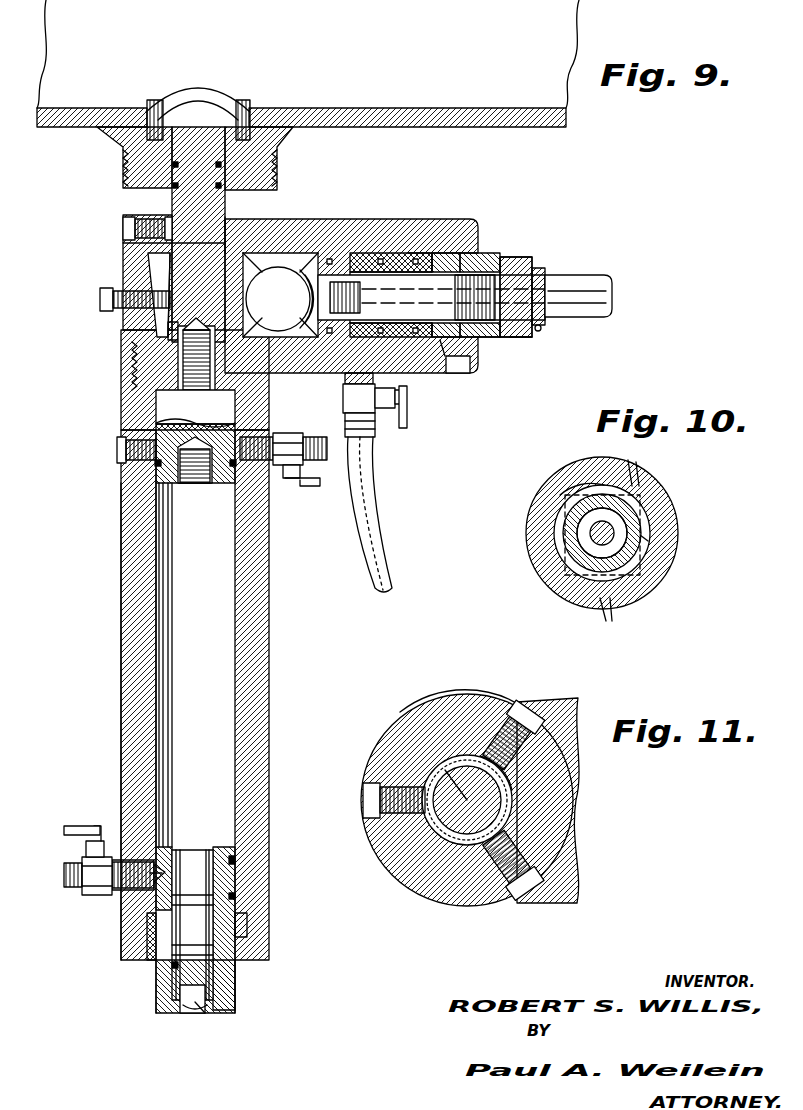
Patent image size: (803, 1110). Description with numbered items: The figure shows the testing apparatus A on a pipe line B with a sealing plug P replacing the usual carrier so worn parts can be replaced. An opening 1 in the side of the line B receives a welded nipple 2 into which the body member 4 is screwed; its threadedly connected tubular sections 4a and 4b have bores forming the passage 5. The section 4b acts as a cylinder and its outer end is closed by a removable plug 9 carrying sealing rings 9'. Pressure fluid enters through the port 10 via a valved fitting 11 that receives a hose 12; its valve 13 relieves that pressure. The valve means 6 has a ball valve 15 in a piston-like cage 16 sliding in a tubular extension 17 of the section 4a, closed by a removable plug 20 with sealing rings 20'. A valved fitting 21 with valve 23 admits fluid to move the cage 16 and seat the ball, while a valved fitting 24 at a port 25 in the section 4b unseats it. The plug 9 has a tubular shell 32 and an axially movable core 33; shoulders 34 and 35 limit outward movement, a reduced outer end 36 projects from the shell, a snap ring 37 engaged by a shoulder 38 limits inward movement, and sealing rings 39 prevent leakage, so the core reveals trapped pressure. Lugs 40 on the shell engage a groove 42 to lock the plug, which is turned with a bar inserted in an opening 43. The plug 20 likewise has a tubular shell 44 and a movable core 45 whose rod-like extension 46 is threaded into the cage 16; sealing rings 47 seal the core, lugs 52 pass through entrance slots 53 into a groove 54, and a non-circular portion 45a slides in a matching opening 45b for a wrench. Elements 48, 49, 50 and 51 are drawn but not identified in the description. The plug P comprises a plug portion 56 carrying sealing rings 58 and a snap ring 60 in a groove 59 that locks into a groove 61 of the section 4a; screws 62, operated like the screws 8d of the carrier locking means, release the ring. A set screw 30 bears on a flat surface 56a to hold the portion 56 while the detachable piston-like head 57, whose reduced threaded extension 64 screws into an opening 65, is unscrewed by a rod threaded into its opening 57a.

In FIG. 9, the pipe line B is at (308, 63).
In FIG. 9, the opening 1 is at (245, 106).
In FIG. 9, the nipple 2 is at (120, 158).
In FIG. 9, the body member 4 is at (117, 643).
In FIG. 11, the body member 4 is at (493, 699).
In FIG. 9, the tubular section 4a is at (120, 400).
In FIG. 11, the tubular section 4a is at (455, 699).
In FIG. 9, the tubular section 4b is at (130, 601).
In FIG. 9, the passage 5 is at (278, 609).
In FIG. 9, the valve means 6 is at (292, 266).
In FIG. 9, the screws 8d is at (118, 453).
In FIG. 9, the removable plug 9 is at (267, 986).
In FIG. 9, the sealing rings 9' is at (264, 855).
In FIG. 9, the port 10 is at (445, 246).
In FIG. 9, the valved fitting 11 is at (98, 230).
In FIG. 9, the hose 12 is at (386, 527).
In FIG. 9, the valve 13 is at (82, 860).
In FIG. 9, the ball valve 15 is at (280, 295).
In FIG. 9, the piston-like cage 16 is at (348, 250).
In FIG. 9, the tubular extension 17 is at (373, 216).
In FIG. 10, the tubular extension 17 is at (522, 511).
In FIG. 11, the tubular extension 17 is at (576, 701).
In FIG. 9, the removable plug 20 is at (532, 271).
In FIG. 10, the removable plug 20 is at (655, 533).
In FIG. 9, the sealing rings 20' is at (416, 221).
In FIG. 9, the valved fitting 21 is at (375, 431).
In FIG. 9, the valve 23 is at (345, 385).
In FIG. 9, the valved fitting 24 is at (290, 434).
In FIG. 9, the port 25 is at (157, 463).
In FIG. 9, the set screw 30 is at (100, 299).
In FIG. 9, the tubular shell 32 is at (234, 979).
In FIG. 9, the core 33 is at (192, 866).
In FIG. 9, the shoulder 34 is at (216, 1004).
In FIG. 9, the shoulder 35 is at (186, 1015).
In FIG. 9, the reduced outer end 36 is at (201, 1013).
In FIG. 9, the snap ring 37 is at (226, 851).
In FIG. 9, the shoulder 38 is at (234, 897).
In FIG. 9, the sealing rings 39 is at (180, 969).
In FIG. 9, the lugs 40 is at (249, 918).
In FIG. 9, the groove 42 is at (148, 926).
In FIG. 9, the opening 43 is at (158, 981).
In FIG. 9, the tubular shell 44 is at (500, 337).
In FIG. 10, the tubular shell 44 is at (574, 526).
In FIG. 9, the movable core 45 is at (518, 274).
In FIG. 10, the movable core 45 is at (592, 541).
In FIG. 9, the portion 45a is at (590, 278).
In FIG. 9, the opening 45b is at (528, 261).
In FIG. 9, the rod-like extension 46 is at (440, 343).
In FIG. 10, the rod-like extension 46 is at (641, 541).
In FIG. 9, the sealing rings 47 is at (470, 274).
In FIG. 9, the washer 48 is at (545, 269).
In FIG. 9, the pin 49 is at (545, 331).
In FIG. 9, the shoulder 50 is at (496, 340).
In FIG. 9, the shoulder 51 is at (516, 340).
In FIG. 9, the lugs 52 is at (442, 252).
In FIG. 10, the lugs 52 is at (580, 471).
In FIG. 10, the entrance slots 53 is at (650, 509).
In FIG. 9, the groove 54 is at (465, 363).
In FIG. 10, the groove 54 is at (636, 481).
In FIG. 9, the plug portion 56 is at (168, 331).
In FIG. 9, the flat surfaces 56a is at (162, 311).
In FIG. 9, the piston-like head 57 is at (160, 418).
In FIG. 9, the screw threaded opening 57a is at (206, 484).
In FIG. 9, the sealing rings 58 is at (222, 185).
In FIG. 9, the groove 59 is at (232, 226).
In FIG. 11, the groove 59 is at (500, 815).
In FIG. 9, the snap ring 60 is at (165, 223).
In FIG. 11, the snap ring 60 is at (516, 796).
In FIG. 9, the groove 61 is at (168, 244).
In FIG. 11, the groove 61 is at (510, 787).
In FIG. 9, the screws 62 is at (123, 229).
In FIG. 11, the screws 62 is at (519, 729).
In FIG. 9, the reduced threaded extension 64 is at (184, 351).
In FIG. 9, the opening 65 is at (182, 371).
In FIG. 9, the testing apparatus A is at (117, 557).
In FIG. 9, the sealing plug P is at (160, 269).
In FIG. 11, the sealing plug P is at (444, 770).